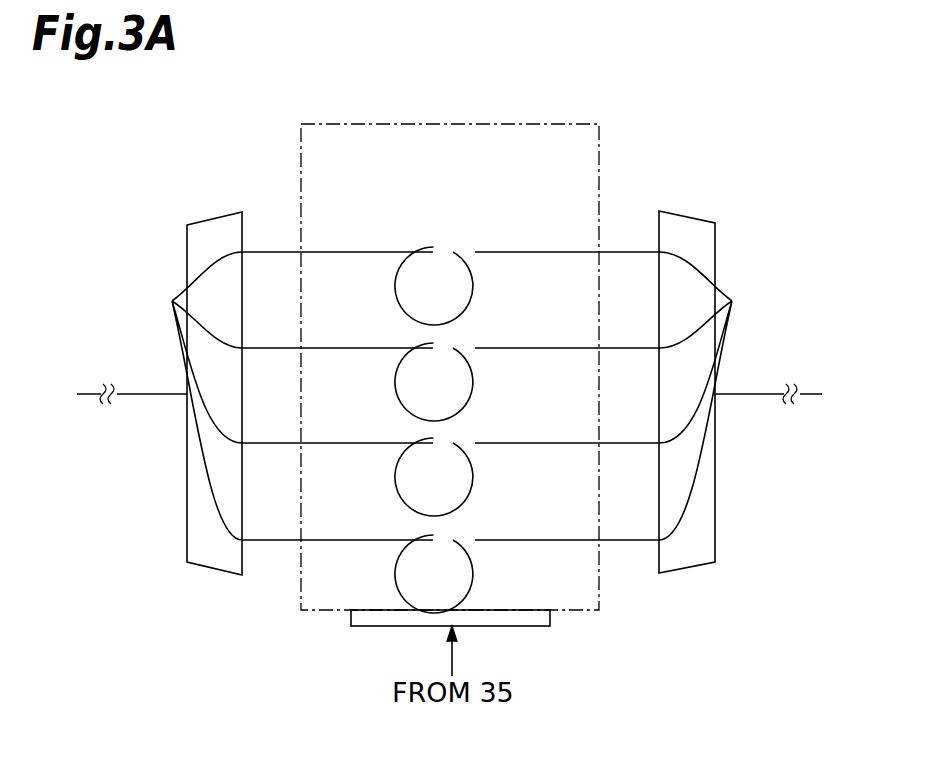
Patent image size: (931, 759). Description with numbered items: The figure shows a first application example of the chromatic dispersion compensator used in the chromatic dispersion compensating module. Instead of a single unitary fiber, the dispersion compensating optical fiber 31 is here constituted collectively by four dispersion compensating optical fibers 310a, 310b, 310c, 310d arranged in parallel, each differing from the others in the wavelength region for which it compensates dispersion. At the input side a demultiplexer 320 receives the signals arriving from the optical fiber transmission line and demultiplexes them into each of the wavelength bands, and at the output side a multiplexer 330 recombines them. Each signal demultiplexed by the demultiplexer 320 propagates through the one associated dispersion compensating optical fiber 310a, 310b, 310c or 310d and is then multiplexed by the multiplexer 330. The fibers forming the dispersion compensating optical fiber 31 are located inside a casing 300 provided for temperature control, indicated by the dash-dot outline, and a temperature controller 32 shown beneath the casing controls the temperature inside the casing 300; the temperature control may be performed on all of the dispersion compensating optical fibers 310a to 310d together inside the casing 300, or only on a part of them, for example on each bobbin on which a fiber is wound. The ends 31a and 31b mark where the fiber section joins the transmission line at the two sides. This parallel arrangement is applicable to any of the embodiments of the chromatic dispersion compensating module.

The dispersion compensating optical fiber 31 is at (449, 318).
The input end of optical fiber 31a is at (177, 396).
The output end of optical fiber 31b is at (722, 396).
The casing 300 is at (599, 157).
The dispersion compensating optical fiber 310a is at (414, 213).
The dispersion compensating optical fiber 310b is at (414, 309).
The dispersion compensating optical fiber 310c is at (414, 404).
The dispersion compensating optical fiber 310d is at (414, 501).
The temperature controller 32 is at (481, 633).
The demultiplexer 320 is at (220, 217).
The multiplexer 330 is at (687, 217).